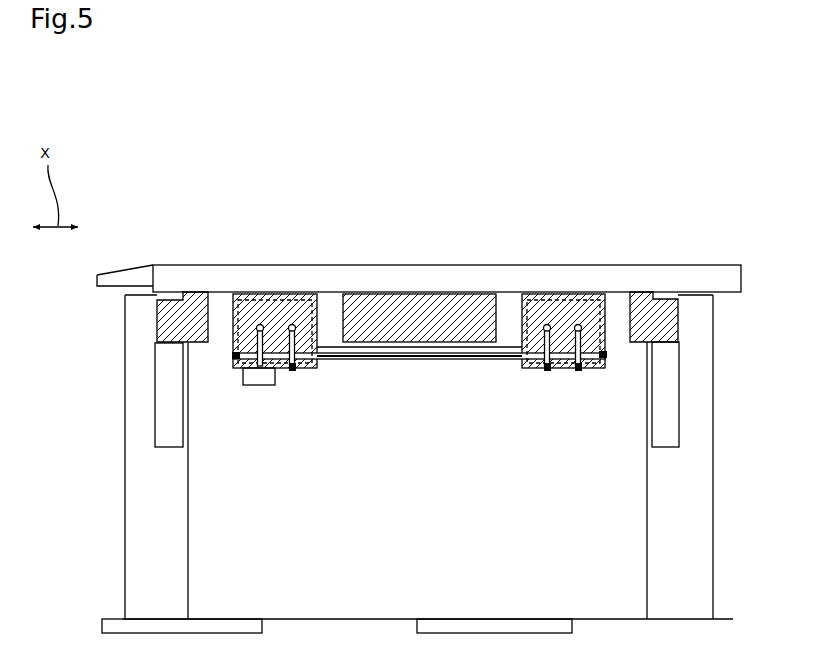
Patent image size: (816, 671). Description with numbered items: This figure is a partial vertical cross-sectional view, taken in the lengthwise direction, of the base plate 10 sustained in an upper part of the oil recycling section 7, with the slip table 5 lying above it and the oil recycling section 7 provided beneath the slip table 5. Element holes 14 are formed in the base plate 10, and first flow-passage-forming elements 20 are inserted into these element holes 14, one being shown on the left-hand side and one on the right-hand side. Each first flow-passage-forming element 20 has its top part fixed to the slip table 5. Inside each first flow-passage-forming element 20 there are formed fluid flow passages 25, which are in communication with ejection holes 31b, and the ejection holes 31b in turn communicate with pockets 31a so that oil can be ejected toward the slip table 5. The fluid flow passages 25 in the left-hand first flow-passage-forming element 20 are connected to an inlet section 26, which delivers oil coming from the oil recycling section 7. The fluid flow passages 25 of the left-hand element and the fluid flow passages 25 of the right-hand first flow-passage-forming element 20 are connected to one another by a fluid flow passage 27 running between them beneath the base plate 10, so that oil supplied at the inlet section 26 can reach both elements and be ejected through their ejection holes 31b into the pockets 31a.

The slip table 5 is at (218, 280).
The oil recycling section 7 is at (122, 350).
The base plate 10 is at (637, 288).
The element hole 14 is at (220, 303).
The first flow-passage-forming element 20 is at (275, 302).
The fluid flow passage 25 is at (255, 360).
The inlet section 26 is at (258, 380).
The fluid flow passage 27 is at (407, 360).
The pocket 31a is at (265, 295).
The ejection hole 31b is at (267, 370).